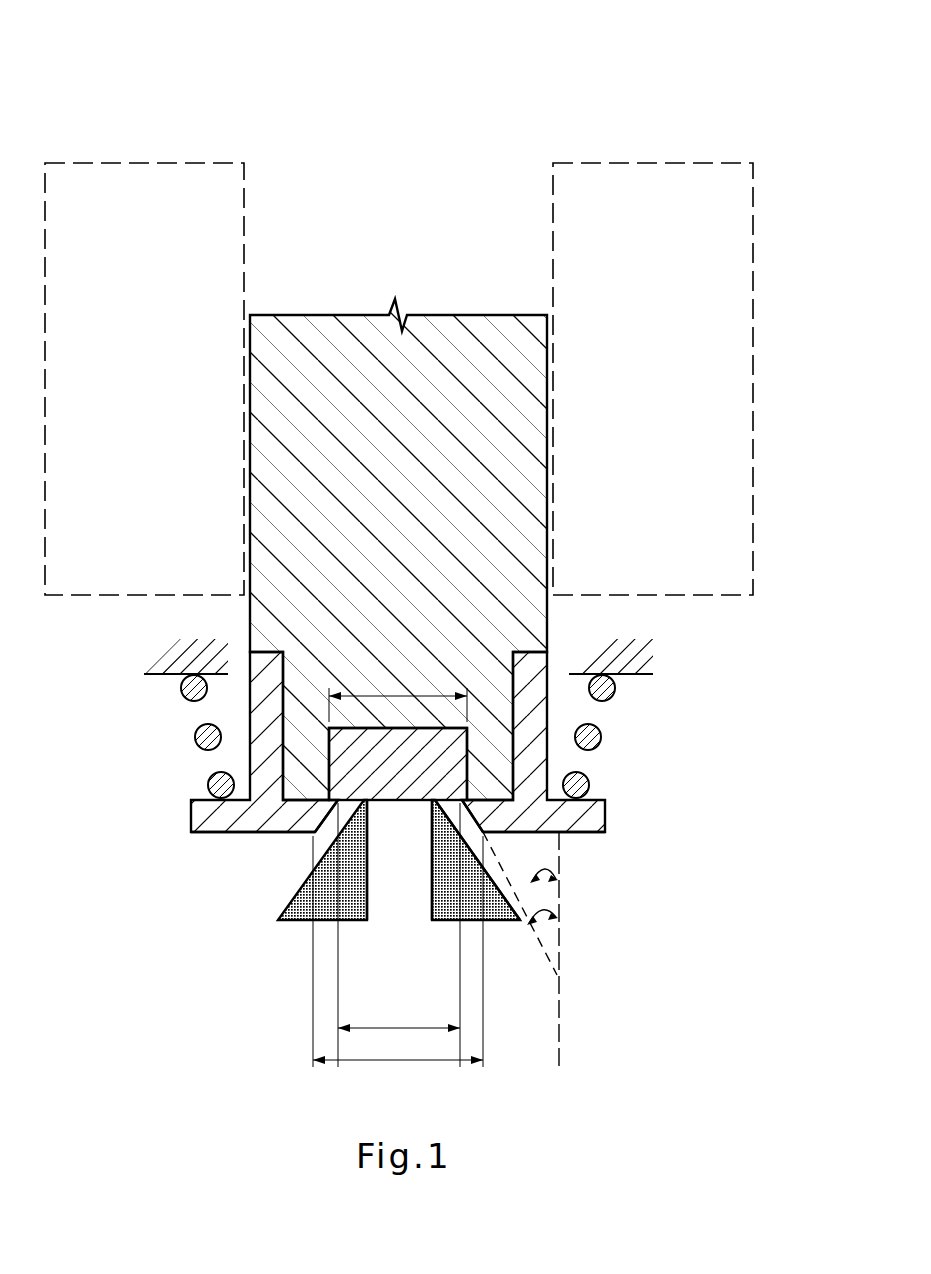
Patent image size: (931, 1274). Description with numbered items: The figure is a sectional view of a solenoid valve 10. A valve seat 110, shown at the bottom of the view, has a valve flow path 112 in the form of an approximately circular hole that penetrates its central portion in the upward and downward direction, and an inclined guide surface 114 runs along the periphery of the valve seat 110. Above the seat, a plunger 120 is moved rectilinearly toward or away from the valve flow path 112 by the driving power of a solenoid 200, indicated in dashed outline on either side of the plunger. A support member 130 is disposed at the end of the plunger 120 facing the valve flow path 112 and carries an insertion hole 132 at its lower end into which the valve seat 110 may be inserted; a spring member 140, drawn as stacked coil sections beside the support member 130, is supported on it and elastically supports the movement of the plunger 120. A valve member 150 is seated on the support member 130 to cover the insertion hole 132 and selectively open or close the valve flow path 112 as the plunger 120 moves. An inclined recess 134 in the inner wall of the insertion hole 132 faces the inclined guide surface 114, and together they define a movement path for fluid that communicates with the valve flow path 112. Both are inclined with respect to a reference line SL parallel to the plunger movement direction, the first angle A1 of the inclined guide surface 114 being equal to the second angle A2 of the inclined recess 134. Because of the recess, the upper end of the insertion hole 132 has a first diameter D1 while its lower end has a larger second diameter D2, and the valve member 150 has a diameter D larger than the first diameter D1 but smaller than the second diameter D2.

The solenoid valve 10 is at (323, 134).
The solenoid 200 is at (753, 378).
The plunger 120 is at (525, 480).
The support member 130 is at (263, 747).
The insertion hole 132 is at (330, 818).
The inclined recess 134 is at (317, 828).
The spring member 140 is at (615, 737).
The valve member 150 is at (467, 762).
The valve seat 110 is at (300, 913).
The valve flow path 112 is at (395, 876).
The inclined guide surface 114 is at (503, 887).
The reference line SL is at (560, 1010).
The first angle A1 is at (552, 905).
The second angle A2 is at (552, 866).
The diameter of valve member D is at (398, 697).
The first diameter D1 is at (399, 935).
The second diameter D2 is at (398, 951).